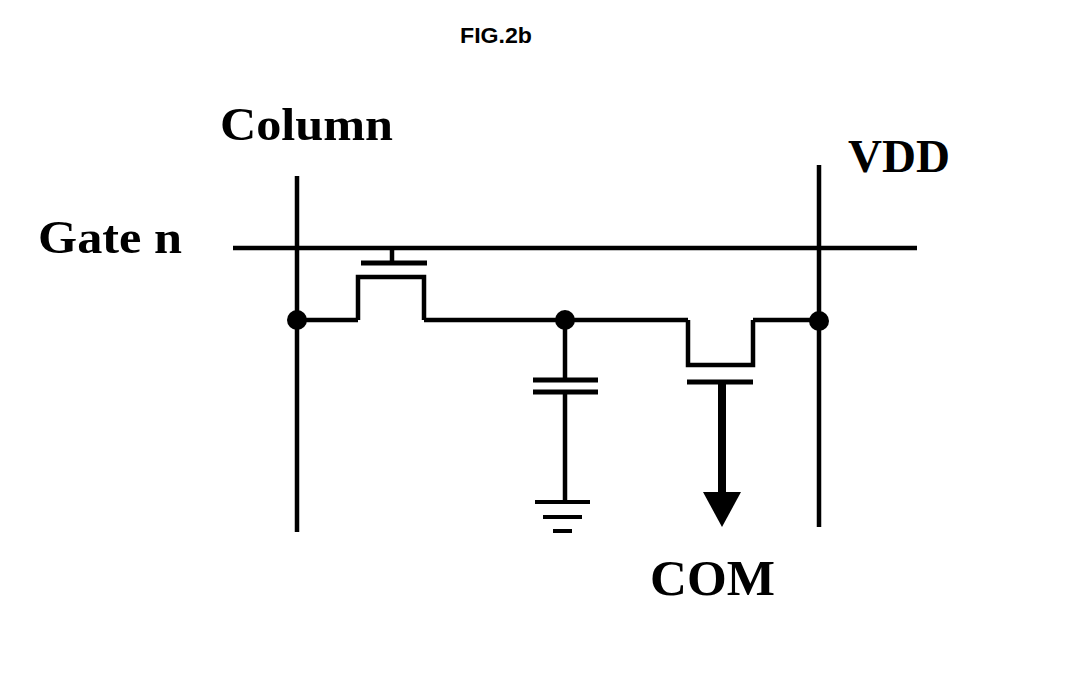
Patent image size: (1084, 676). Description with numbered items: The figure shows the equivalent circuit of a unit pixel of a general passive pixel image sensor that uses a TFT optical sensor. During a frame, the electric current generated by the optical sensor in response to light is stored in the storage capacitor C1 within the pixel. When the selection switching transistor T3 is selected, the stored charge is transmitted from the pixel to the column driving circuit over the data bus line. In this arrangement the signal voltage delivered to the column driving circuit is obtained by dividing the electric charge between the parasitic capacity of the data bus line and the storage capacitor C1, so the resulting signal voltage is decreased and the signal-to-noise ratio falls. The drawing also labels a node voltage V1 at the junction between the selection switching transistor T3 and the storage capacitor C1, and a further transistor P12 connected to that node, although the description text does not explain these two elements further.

The selection switching transistor T3 is at (392, 311).
The storage capacitor C1 is at (526, 425).
The transistor P12 is at (684, 423).
The node voltage V1 is at (574, 280).